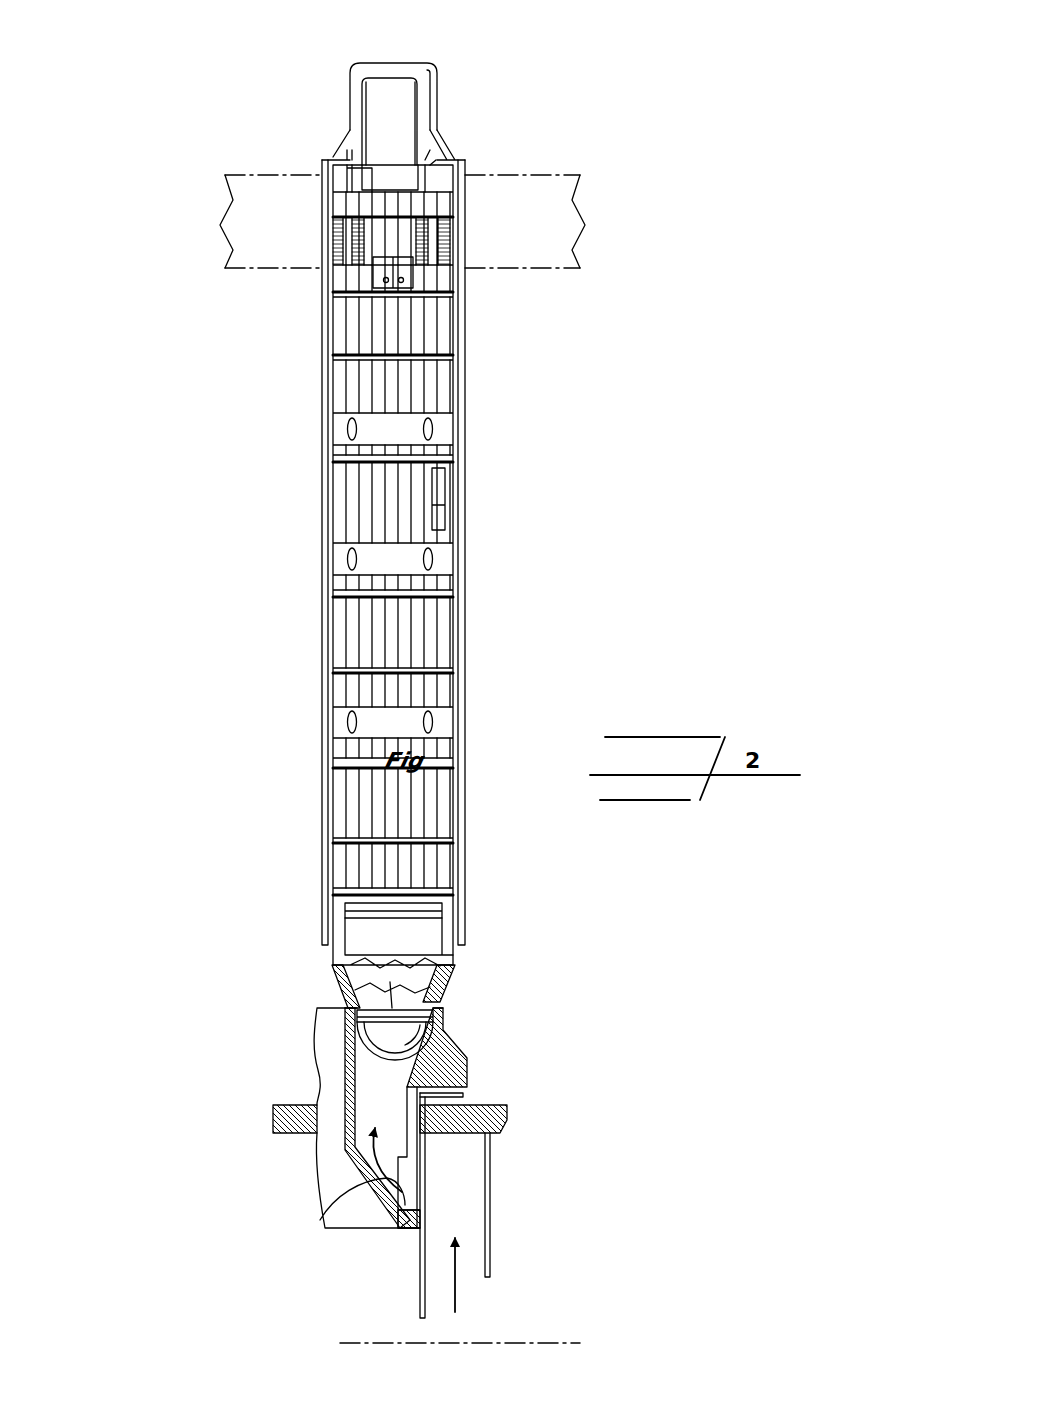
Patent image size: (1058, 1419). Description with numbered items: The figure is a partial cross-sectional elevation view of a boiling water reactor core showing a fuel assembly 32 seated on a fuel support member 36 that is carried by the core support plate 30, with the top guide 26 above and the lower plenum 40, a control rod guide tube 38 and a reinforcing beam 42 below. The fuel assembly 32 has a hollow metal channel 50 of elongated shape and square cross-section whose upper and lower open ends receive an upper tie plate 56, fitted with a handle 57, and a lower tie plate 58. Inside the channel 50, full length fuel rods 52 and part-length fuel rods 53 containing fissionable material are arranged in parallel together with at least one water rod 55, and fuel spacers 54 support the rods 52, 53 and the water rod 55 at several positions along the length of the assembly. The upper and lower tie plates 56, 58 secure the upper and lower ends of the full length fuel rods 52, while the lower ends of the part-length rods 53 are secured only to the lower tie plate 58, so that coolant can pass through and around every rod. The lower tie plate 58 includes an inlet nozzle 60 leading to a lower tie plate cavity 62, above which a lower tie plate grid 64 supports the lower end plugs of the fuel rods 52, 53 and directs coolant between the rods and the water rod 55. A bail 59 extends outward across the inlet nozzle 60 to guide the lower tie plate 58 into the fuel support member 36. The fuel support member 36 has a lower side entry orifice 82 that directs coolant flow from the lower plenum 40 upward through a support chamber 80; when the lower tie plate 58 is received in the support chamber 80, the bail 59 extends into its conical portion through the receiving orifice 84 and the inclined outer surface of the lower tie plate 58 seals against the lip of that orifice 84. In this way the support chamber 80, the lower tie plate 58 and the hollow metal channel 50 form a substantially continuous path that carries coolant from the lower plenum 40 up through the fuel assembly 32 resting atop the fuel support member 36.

The top guide 26 is at (262, 175).
The core support plate 30 is at (486, 1105).
The fuel assembly 32 is at (478, 354).
The fuel support member 36 is at (450, 1035).
The control rod guide tube 38 is at (420, 1265).
The lower plenum 40 is at (460, 1235).
The reinforcing beam 42 is at (492, 1163).
The hollow metal channel 50 is at (467, 802).
The full length fuel rod 52 is at (443, 645).
The part-length fuel rod 53 is at (433, 527).
The fuel spacer 54 is at (392, 437).
The water rod 55 is at (382, 280).
The upper tie plate 56 is at (433, 128).
The handle 57 is at (382, 63).
The lower tie plate 58 is at (458, 990).
The bail 59 is at (360, 1037).
The inlet nozzle 60 is at (383, 1035).
The lower tie plate cavity 62 is at (390, 982).
The lower tie plate grid 64 is at (440, 908).
The support chamber 80 is at (350, 1152).
The lower side entry orifice 82 is at (383, 1200).
The receiving orifice 84 is at (448, 1012).